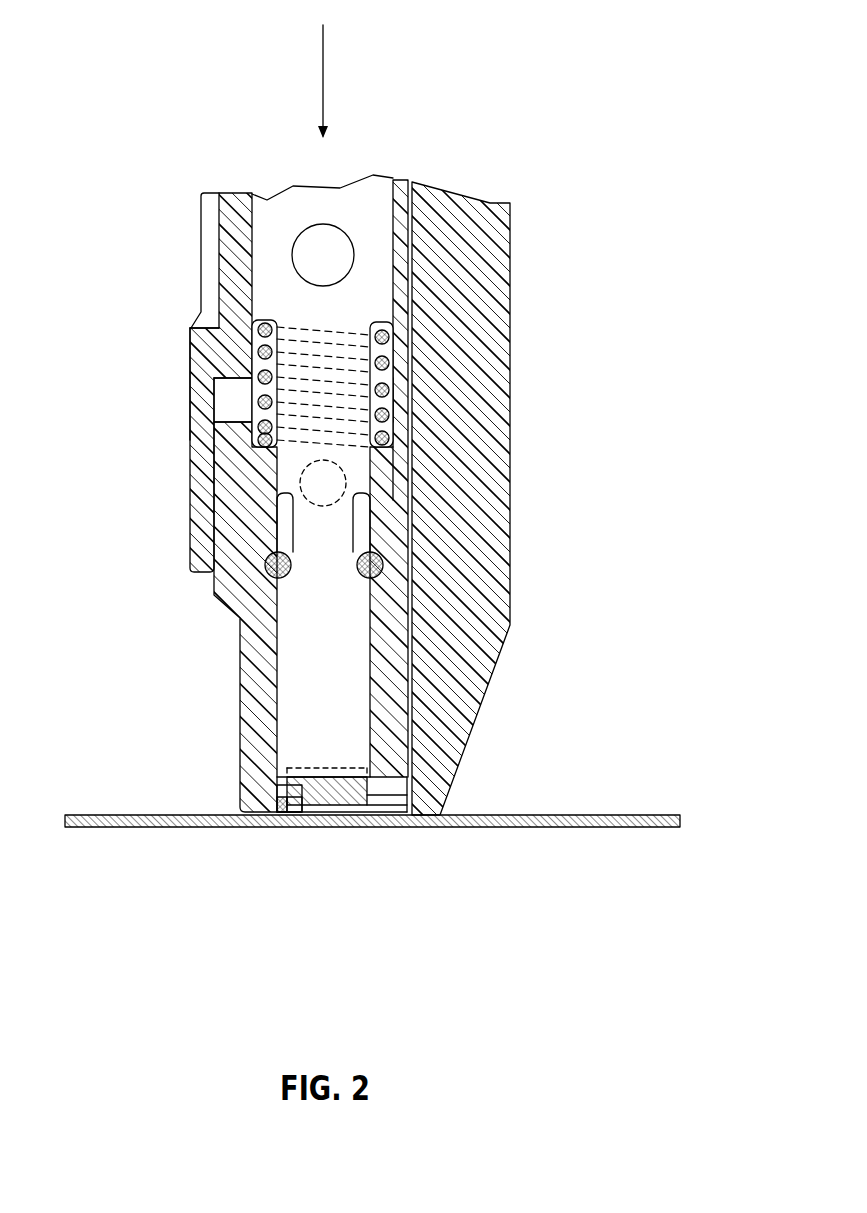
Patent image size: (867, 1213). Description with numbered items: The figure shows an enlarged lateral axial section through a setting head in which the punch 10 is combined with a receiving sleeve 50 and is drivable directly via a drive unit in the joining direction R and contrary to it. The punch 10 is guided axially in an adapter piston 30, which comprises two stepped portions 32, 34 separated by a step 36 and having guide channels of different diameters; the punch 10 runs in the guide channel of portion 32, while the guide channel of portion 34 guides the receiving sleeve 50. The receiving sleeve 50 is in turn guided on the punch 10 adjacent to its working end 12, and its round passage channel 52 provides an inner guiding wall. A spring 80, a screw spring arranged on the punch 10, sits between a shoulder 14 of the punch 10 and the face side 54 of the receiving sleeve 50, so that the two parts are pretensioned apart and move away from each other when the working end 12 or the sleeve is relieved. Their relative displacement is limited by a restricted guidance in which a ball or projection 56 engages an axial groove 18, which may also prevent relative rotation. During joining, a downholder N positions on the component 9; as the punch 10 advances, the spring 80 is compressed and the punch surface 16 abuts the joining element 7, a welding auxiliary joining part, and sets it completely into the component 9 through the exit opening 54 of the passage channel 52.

The joining direction R is at (323, 85).
The punch 10 is at (275, 288).
The portion of the adapter piston 32 is at (237, 208).
The adapter piston 30 is at (232, 242).
The portion of the adapter piston 34 is at (200, 470).
The step 36 is at (215, 340).
The spring 80 is at (248, 400).
The receiving sleeve 50 is at (247, 643).
The passage channel 52 is at (372, 672).
The shoulder 14 is at (390, 330).
The working end 12 is at (313, 668).
The axial groove 18 is at (287, 520).
The projection 56 is at (380, 565).
The downholder N is at (490, 447).
The joining element 7 is at (330, 805).
The punch surface 16 is at (327, 785).
The face side / exit opening 54 is at (390, 443).
The component 9 is at (530, 818).